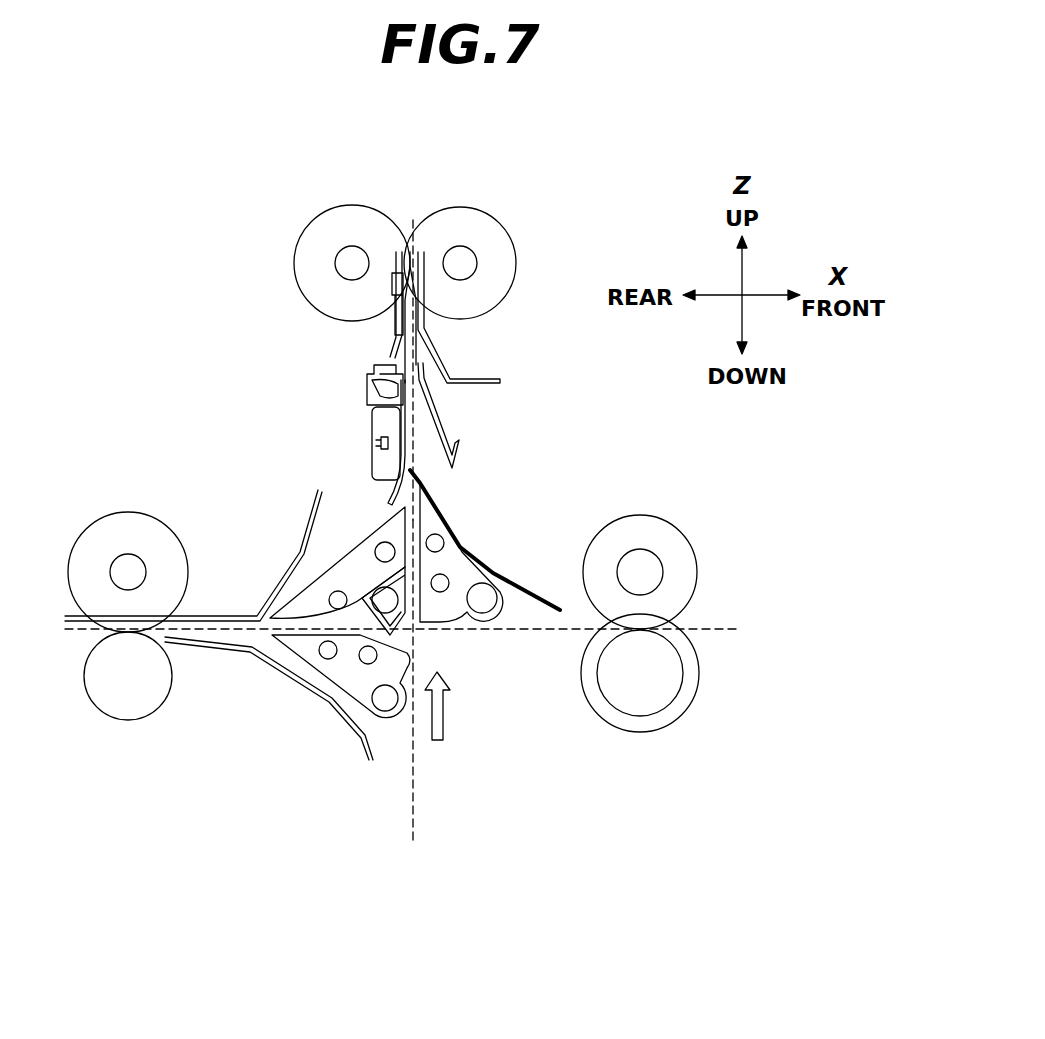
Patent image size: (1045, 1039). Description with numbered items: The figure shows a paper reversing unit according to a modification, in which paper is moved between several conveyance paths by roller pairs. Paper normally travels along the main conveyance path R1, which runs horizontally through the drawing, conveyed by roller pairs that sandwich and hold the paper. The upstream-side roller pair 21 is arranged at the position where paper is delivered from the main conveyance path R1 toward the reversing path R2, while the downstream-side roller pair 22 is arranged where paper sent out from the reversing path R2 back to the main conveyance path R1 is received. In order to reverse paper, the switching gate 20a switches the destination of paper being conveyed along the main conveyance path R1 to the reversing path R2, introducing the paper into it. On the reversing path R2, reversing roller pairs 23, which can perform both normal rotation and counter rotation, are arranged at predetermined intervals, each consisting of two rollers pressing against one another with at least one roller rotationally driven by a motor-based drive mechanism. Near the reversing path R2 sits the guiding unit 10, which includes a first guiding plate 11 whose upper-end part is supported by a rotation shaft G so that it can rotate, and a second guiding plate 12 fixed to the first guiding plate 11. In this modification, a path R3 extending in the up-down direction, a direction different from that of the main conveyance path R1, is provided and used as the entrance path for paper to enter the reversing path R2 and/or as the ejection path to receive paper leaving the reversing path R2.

The guiding unit 10 is at (431, 434).
The first guiding plate 11 is at (403, 417).
The second guiding plate 12 is at (447, 430).
The switching gate 20a is at (457, 622).
The upstream-side roller pair 21 is at (662, 533).
The downstream-side roller pair 22 is at (157, 533).
The reversing roller pairs 23 is at (500, 292).
The rotation shaft G is at (388, 395).
The main conveyance path R1 is at (720, 627).
The reversing path R2 is at (414, 233).
The path R3 is at (415, 823).